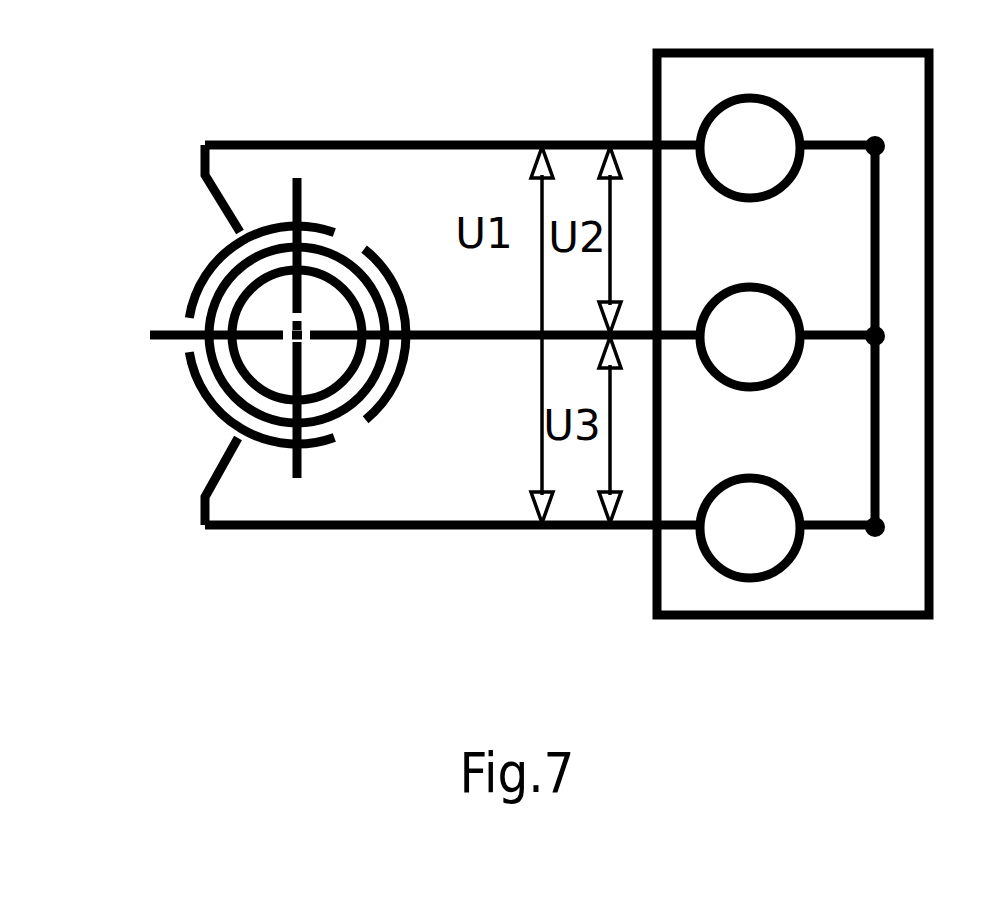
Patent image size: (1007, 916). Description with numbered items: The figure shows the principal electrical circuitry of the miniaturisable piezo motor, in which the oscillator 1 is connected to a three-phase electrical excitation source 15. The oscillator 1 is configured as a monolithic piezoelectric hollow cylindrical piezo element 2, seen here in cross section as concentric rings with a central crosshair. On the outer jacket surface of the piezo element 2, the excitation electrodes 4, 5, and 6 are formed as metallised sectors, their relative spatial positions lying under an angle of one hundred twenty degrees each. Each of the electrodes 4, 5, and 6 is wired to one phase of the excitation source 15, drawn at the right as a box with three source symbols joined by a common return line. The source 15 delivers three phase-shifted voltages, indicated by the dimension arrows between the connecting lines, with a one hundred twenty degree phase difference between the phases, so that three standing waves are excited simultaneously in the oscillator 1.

The oscillator 1 is at (158, 438).
The piezo element 2 is at (360, 215).
The excitation electrode 4 is at (191, 237).
The excitation electrode 5 is at (438, 294).
The excitation electrode 6 is at (263, 481).
The 3-phase electrical excitation source 15 is at (793, 334).